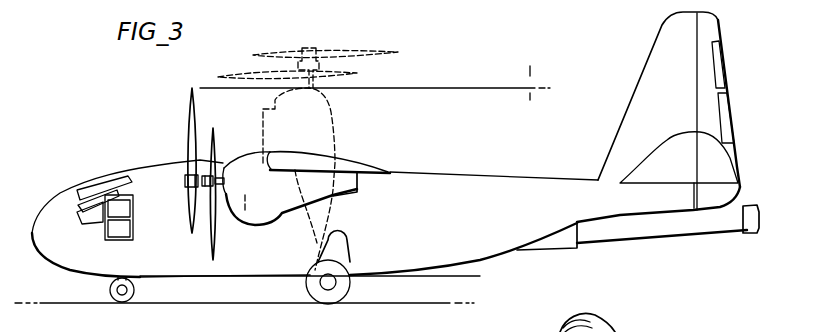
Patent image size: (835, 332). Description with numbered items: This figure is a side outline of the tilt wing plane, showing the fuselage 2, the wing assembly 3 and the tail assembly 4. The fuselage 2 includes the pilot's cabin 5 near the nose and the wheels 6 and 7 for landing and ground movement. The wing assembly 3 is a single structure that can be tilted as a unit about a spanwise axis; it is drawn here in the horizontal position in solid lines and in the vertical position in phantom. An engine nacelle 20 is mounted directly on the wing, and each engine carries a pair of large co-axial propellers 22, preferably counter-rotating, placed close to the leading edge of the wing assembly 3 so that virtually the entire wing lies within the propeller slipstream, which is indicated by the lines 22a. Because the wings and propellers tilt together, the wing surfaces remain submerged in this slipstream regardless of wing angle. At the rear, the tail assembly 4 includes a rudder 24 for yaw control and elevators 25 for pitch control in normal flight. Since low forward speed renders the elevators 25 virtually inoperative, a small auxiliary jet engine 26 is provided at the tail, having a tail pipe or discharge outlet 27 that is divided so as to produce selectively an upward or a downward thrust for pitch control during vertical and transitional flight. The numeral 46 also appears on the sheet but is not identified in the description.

The fuselage 2 is at (444, 216).
The wing assembly 3 is at (350, 167).
The tail assembly 4 is at (643, 43).
The pilot's cabin 5 is at (92, 188).
The wheel 6 is at (322, 293).
The wheel 7 is at (118, 300).
The engine nacelle 20 is at (248, 168).
The propellers 22 is at (190, 107).
The slipstream lines 22a is at (208, 92).
The rudder 24 is at (707, 32).
The elevators 25 is at (717, 160).
The jet engine 26 is at (550, 243).
The tail pipe or discharge outlet 27 is at (753, 233).
The rotor hub 46 is at (622, 331).